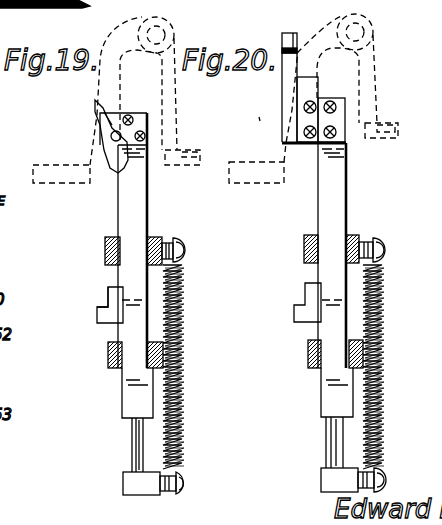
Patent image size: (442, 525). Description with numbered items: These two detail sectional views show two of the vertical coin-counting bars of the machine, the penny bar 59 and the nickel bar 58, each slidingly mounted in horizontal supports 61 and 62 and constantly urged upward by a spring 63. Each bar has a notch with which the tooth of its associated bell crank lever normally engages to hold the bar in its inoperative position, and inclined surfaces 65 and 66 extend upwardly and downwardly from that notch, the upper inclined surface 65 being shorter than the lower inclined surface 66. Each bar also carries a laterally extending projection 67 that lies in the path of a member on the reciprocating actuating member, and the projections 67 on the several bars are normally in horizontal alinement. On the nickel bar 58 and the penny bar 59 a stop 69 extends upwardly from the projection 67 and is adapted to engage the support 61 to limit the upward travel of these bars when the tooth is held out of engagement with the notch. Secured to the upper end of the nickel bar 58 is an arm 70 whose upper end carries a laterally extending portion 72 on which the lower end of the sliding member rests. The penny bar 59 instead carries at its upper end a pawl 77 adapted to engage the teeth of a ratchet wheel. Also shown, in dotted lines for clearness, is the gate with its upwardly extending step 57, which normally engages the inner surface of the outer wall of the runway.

In FIG. 20, the step 57 is at (293, 110).
In FIG. 20, the nickel bar 58 is at (338, 196).
In FIG. 19, the penny bar 59 is at (140, 215).
In FIG. 19, the horizontal support 61 is at (162, 240).
In FIG. 20, the horizontal support 61 is at (358, 237).
In FIG. 19, the horizontal support 62 is at (178, 347).
In FIG. 20, the horizontal support 62 is at (378, 347).
In FIG. 19, the spring 63 is at (180, 412).
In FIG. 20, the spring 63 is at (383, 412).
In FIG. 20, the inclined surface 65 is at (331, 128).
In FIG. 20, the inclined surface 66 is at (318, 147).
In FIG. 19, the laterally extending projection 67 is at (101, 318).
In FIG. 20, the laterally extending projection 67 is at (300, 313).
In FIG. 19, the stop 69 is at (113, 296).
In FIG. 20, the arm 70 is at (290, 72).
In FIG. 20, the laterally extending portion 72 is at (297, 34).
In FIG. 19, the pawl 77 is at (113, 176).